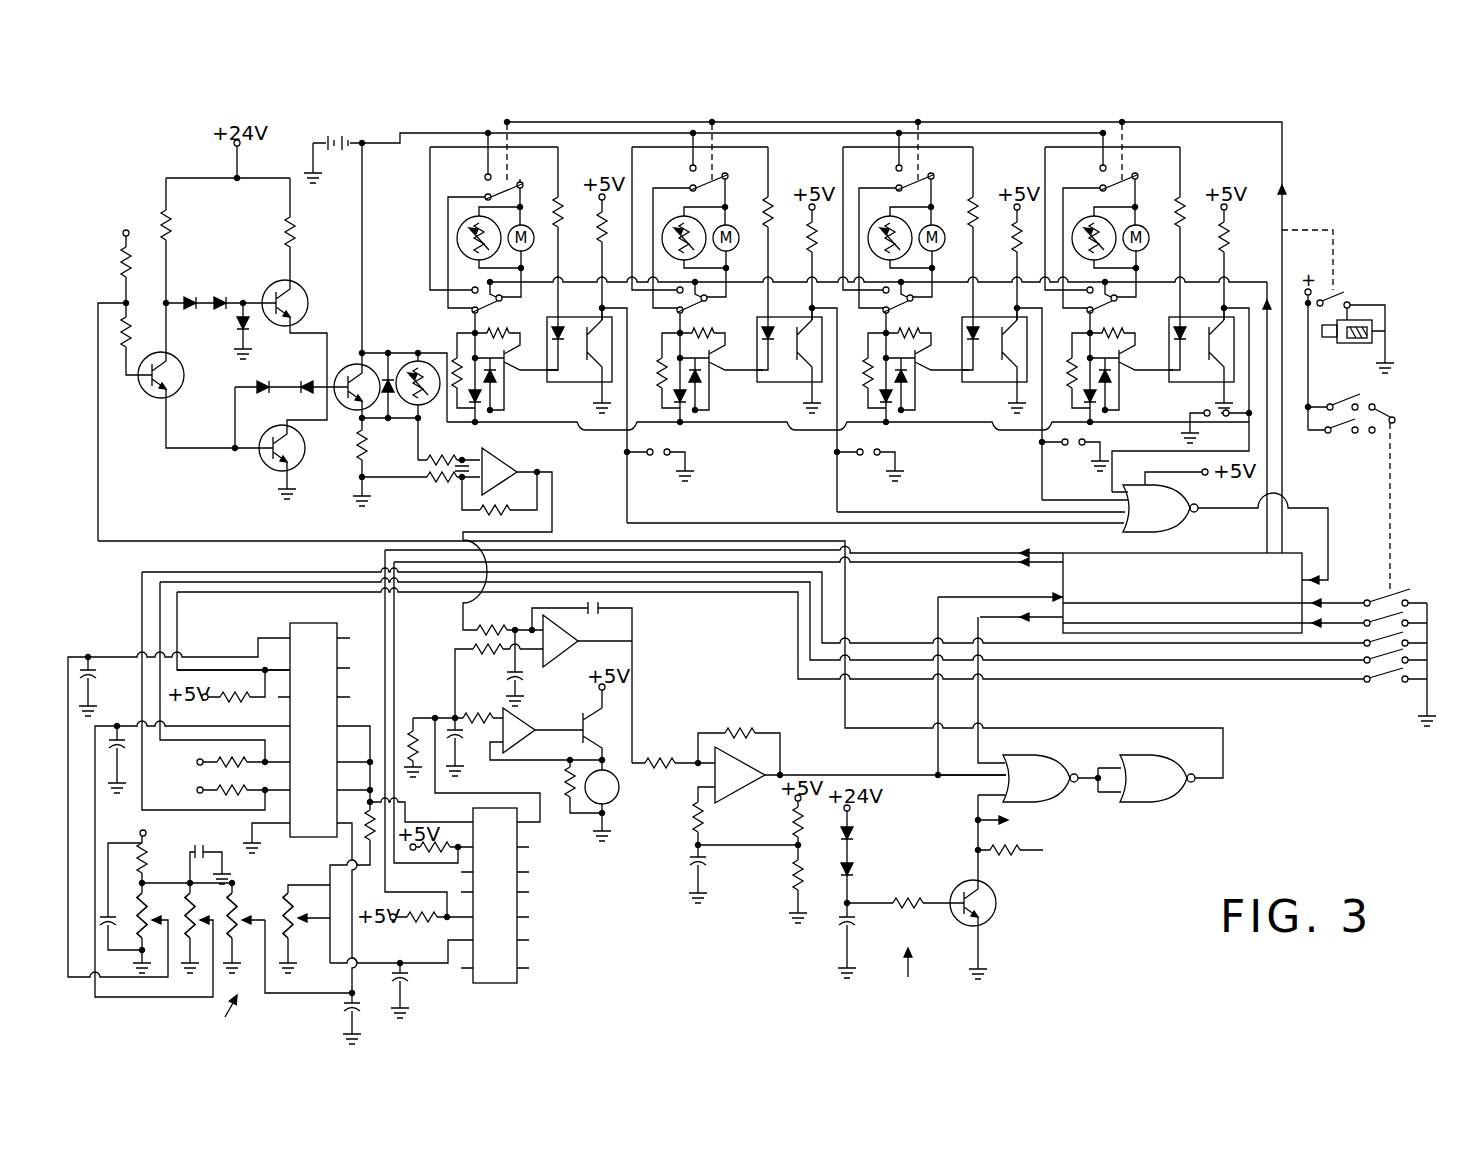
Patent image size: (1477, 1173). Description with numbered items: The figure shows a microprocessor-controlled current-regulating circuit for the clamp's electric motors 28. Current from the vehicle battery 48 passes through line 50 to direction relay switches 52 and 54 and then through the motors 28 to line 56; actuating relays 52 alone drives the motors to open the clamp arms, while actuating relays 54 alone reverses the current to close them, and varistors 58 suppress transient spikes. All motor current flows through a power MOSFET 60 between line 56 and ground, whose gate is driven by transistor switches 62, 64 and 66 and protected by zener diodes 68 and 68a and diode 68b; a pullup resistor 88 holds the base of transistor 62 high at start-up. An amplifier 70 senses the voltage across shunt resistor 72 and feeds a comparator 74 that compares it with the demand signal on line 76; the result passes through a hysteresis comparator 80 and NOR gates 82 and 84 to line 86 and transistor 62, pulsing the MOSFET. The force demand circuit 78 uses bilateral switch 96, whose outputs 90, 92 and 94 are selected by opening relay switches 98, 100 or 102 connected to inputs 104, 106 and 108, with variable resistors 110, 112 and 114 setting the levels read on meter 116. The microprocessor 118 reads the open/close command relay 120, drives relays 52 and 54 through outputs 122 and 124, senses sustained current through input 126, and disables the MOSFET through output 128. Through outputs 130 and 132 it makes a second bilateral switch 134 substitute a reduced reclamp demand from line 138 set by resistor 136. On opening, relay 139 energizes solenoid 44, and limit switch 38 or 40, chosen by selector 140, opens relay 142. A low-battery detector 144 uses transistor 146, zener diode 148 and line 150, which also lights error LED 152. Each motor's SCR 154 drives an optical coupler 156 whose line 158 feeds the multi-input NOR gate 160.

The motors 28 is at (534, 243).
The limit switch 38 is at (1342, 440).
The limit switch 40 is at (1362, 390).
The solenoid 44 is at (1348, 345).
The battery 48 is at (331, 134).
The line 50 is at (400, 131).
The relay switches 52 is at (486, 191).
The relay switches 54 is at (487, 306).
The line 56 is at (578, 423).
The varistors 58 is at (523, 209).
The power MOSFET 60 is at (352, 364).
The transistor switch 62 is at (182, 365).
The transistor switch 64 is at (300, 290).
The transistor switch 66 is at (308, 458).
The zener diode 68 is at (262, 382).
The zener diode 68a is at (238, 335).
The diode 68b is at (305, 395).
The amplifier 70 is at (500, 456).
The current-sensing shunt resistor 72 is at (366, 452).
The comparator 74 is at (563, 662).
The line 76 is at (455, 663).
The force demand circuit 78 is at (226, 1019).
The comparator 80 is at (742, 790).
The NOR gate 82 is at (1060, 795).
The NOR gate 84 is at (1162, 800).
The line 86 is at (204, 540).
The pullup resistor 88 is at (122, 265).
The output 90 is at (365, 722).
The output 92 is at (353, 745).
The output 94 is at (353, 777).
The bilateral switch 96 is at (290, 626).
The clamp force selection relay switch 98 is at (1408, 637).
The clamp force selection relay switch 100 is at (1408, 655).
The clamp force selection relay switch 102 is at (1408, 674).
The input 104 is at (278, 788).
The input 106 is at (280, 760).
The input 108 is at (272, 668).
The variable resistor 110 is at (146, 892).
The variable resistor 112 is at (207, 900).
The variable resistor 114 is at (287, 938).
The meter 116 is at (620, 788).
The microprocessor 118 is at (1186, 617).
The clamp open/close command relay switch 120 is at (1410, 612).
The output 122 is at (1285, 175).
The output 124 is at (1265, 280).
The input 126 is at (937, 745).
The output 128 is at (980, 697).
The output 130 is at (892, 564).
The output 132 is at (900, 553).
The bilateral switch 134 is at (530, 940).
The variable resistor 136 is at (285, 896).
The line 138 is at (423, 965).
The relay 139 is at (1330, 298).
The selector 140 is at (1392, 417).
The relay switch 142 is at (1412, 585).
The detector circuit 144 is at (911, 977).
The transistor 146 is at (996, 904).
The zener diode 148 is at (855, 831).
The line 150 is at (975, 800).
The error LED 152 is at (1027, 833).
The silicon-controlled rectifier 154 is at (511, 398).
The optical coupler 156 is at (578, 317).
The line 158 is at (622, 500).
The multi-input NOR gate 160 is at (1197, 513).